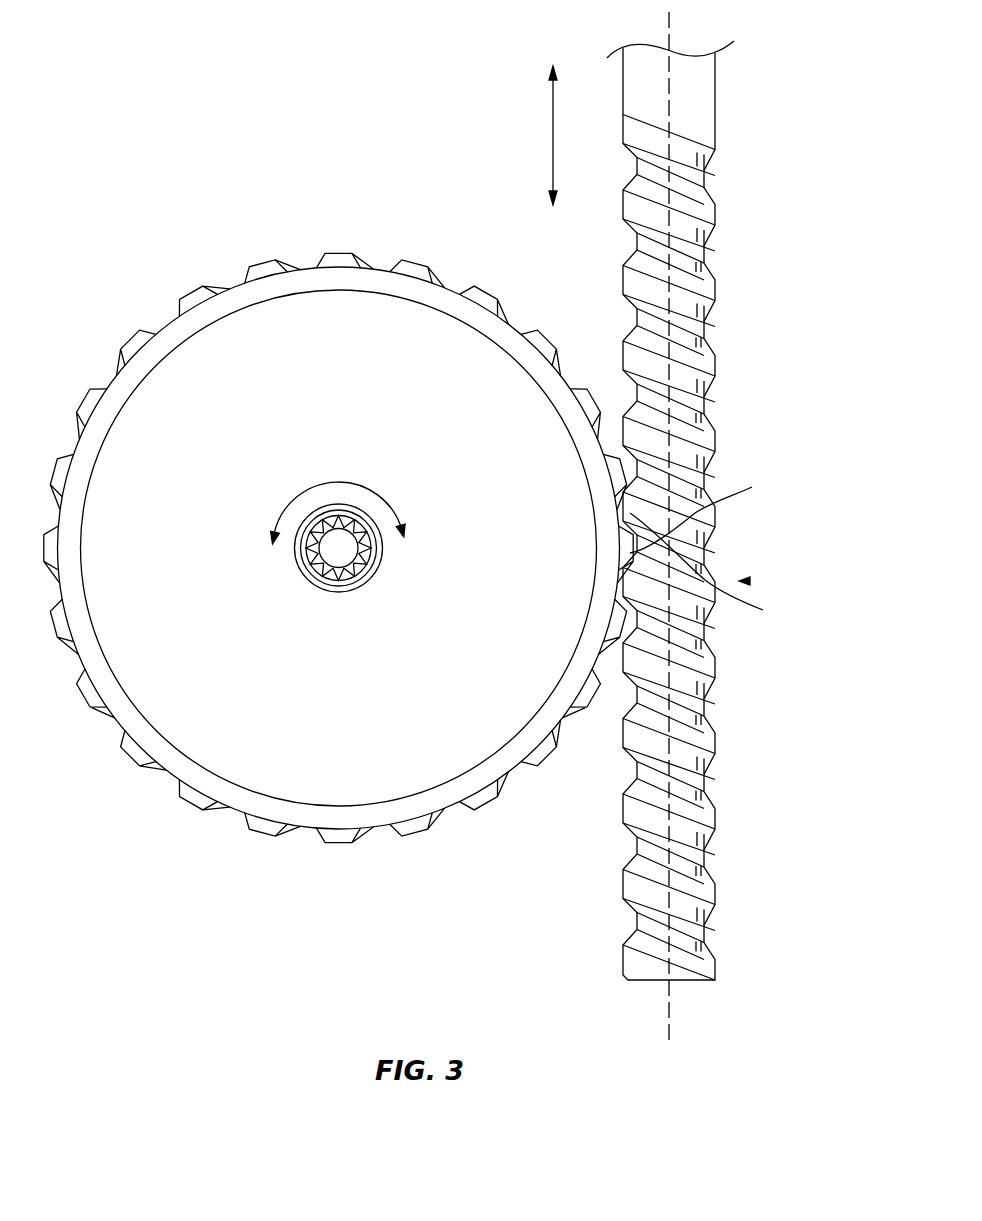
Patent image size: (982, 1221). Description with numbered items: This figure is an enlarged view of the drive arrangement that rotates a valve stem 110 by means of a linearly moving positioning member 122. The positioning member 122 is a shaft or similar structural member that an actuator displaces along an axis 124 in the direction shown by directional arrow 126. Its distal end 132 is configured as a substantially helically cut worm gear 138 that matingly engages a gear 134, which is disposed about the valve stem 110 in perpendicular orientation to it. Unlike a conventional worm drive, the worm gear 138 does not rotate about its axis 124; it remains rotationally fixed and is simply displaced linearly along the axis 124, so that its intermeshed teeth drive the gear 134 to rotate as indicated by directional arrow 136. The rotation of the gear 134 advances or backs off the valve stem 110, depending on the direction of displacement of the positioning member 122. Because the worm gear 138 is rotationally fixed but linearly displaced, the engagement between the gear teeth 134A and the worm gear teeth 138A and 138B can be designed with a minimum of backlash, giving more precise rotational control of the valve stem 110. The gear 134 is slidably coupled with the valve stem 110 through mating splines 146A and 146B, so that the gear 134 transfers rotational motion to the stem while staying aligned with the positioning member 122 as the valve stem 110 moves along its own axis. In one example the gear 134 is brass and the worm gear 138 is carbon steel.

The valve stem 110 is at (333, 549).
The positioning member 122 is at (657, 510).
The axis 124 is at (667, 1028).
The directional arrow 126 is at (553, 125).
The distal end 132 is at (748, 581).
The gear 134 is at (429, 516).
The gear teeth 134A is at (700, 524).
The directional arrow 136 is at (343, 482).
The worm gear 138 is at (621, 813).
The worm gear tooth 138A is at (718, 511).
The worm gear tooth 138B is at (721, 566).
The mating spline 146A is at (362, 572).
The mating spline 146B is at (338, 548).